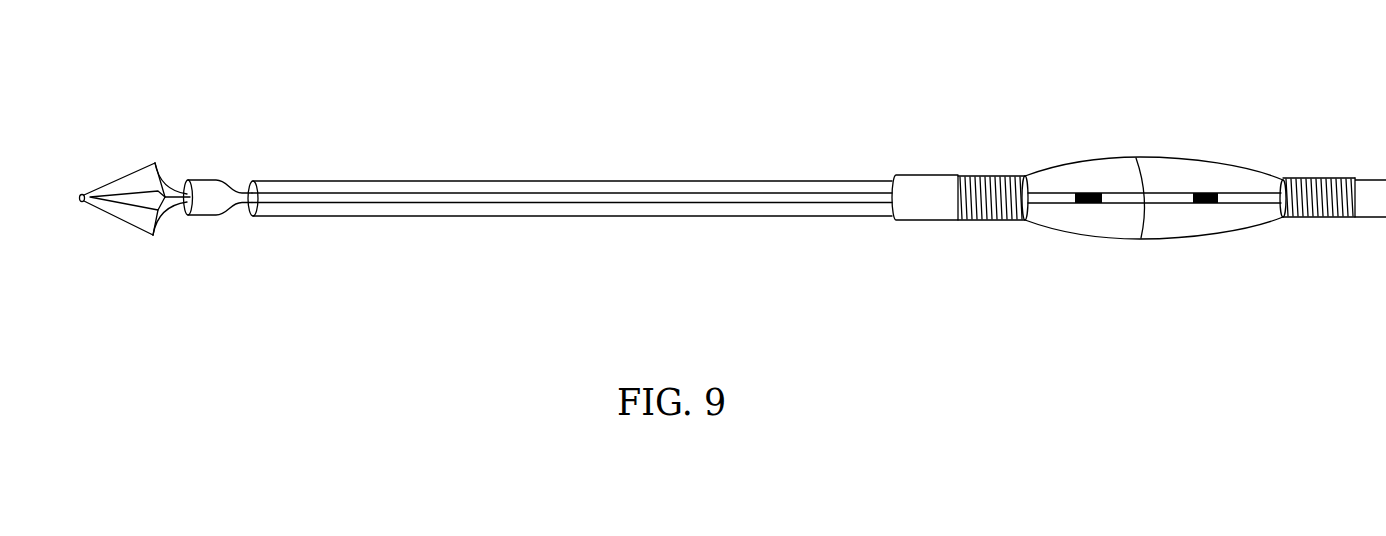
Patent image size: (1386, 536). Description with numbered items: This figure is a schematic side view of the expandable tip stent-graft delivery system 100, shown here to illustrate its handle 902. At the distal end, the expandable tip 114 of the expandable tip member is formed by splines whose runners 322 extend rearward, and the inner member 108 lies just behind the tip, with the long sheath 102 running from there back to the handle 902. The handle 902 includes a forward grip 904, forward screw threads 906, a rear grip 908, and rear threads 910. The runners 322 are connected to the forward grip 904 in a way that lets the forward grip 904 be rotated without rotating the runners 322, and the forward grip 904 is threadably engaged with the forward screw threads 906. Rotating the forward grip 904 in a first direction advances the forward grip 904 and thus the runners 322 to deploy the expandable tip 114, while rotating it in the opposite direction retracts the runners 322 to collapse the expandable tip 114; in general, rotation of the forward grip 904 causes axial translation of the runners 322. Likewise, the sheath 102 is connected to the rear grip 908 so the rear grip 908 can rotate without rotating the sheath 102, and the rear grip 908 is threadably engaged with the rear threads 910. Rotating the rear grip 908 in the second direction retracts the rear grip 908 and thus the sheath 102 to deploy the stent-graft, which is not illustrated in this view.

The expandable tip stent-graft delivery system 100 is at (733, 80).
The sheath 102 is at (487, 180).
The inner member 108 is at (218, 178).
The expandable tip 114 is at (113, 180).
The runner 322 is at (171, 224).
The handle 902 is at (1199, 276).
The forward grip 904 is at (1093, 167).
The forward screw threads 906 is at (990, 177).
The rear grip 908 is at (1215, 168).
The rear threads 910 is at (1318, 178).